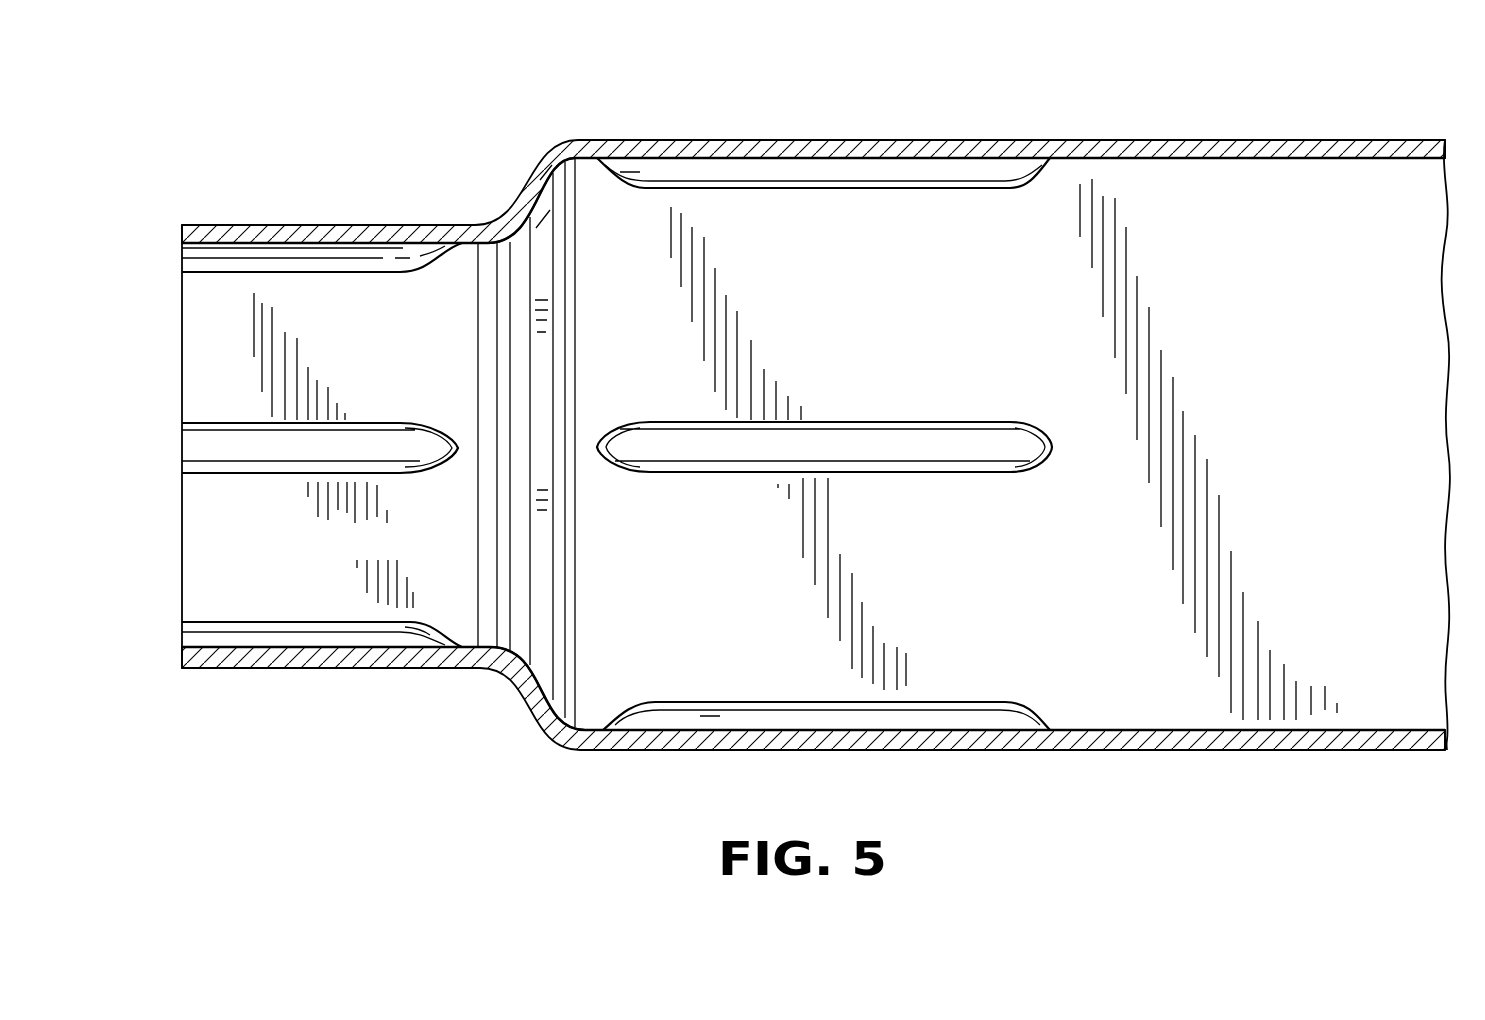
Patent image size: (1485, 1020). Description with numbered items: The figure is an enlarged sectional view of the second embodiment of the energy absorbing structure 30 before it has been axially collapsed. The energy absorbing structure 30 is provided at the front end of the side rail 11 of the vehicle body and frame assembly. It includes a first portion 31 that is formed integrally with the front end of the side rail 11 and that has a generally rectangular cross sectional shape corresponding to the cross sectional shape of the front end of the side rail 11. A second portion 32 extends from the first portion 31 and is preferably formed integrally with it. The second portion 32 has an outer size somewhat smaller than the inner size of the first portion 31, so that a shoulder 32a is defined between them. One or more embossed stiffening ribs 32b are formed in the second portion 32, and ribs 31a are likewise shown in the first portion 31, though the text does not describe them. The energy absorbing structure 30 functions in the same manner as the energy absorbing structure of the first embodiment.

The energy absorbing structure 30 is at (1052, 80).
The first portion 31 is at (713, 147).
The longitudinal ribs of large-diameter portion 31a is at (812, 186).
The second portion 32 is at (286, 231).
The shoulder 32a is at (533, 195).
The embossed stiffening ribs 32b is at (338, 263).
The side rail 11 is at (1348, 140).